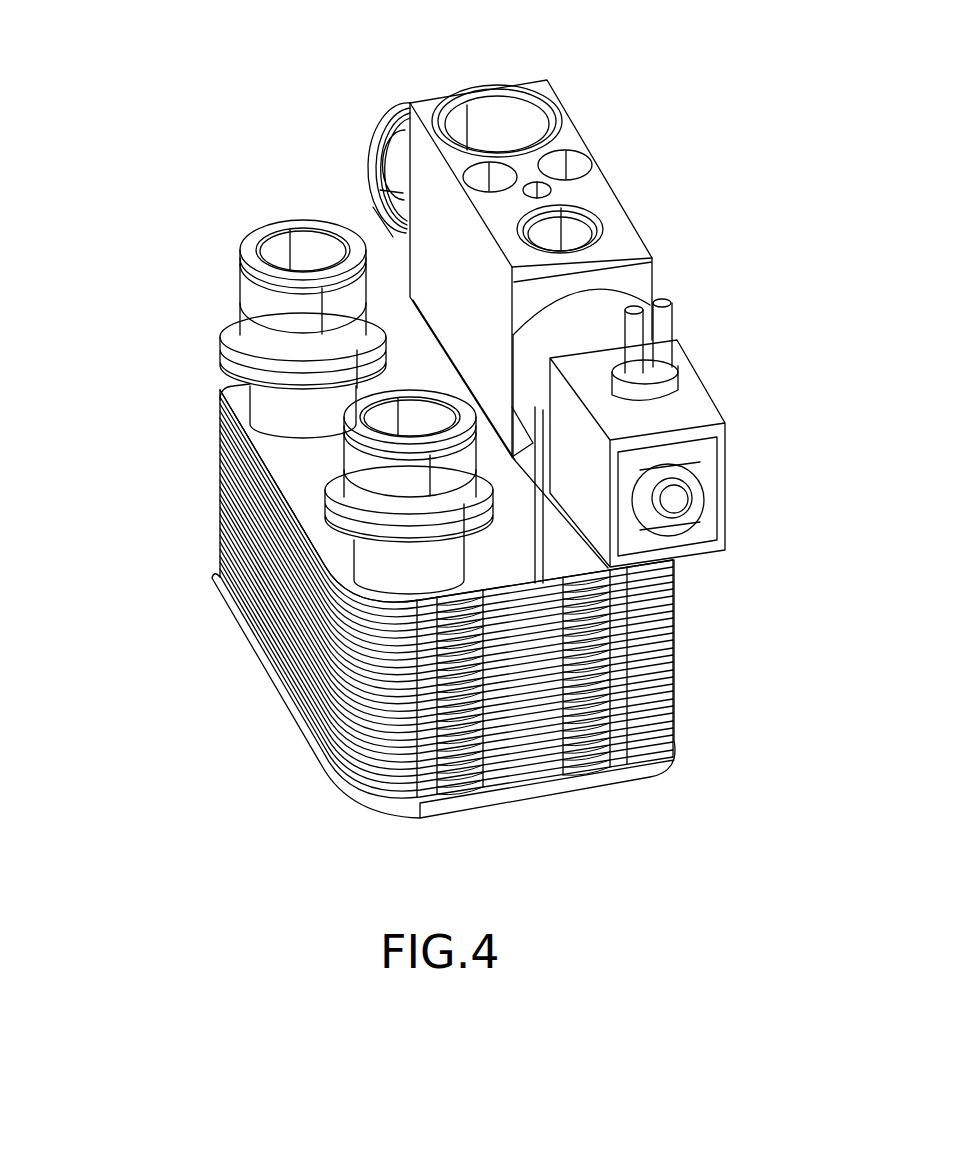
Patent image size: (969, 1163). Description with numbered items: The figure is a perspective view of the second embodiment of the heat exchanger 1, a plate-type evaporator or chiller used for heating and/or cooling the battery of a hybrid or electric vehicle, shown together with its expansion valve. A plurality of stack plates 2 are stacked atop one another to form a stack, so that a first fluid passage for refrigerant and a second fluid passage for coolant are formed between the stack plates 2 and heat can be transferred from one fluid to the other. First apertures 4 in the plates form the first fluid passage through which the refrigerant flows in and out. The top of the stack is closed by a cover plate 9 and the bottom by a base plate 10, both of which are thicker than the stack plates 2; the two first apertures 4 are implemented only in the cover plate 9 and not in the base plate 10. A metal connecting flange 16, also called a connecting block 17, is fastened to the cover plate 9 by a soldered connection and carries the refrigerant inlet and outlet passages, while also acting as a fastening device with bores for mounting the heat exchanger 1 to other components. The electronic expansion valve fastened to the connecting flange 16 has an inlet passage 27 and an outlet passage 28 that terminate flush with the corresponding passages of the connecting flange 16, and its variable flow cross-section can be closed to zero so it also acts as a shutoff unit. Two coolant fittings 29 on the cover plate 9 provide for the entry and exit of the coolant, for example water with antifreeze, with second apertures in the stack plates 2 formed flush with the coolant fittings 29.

The heat exchanger 1 is at (450, 443).
The stack plates 2 is at (220, 486).
The first apertures 4 is at (382, 538).
The cover plate 9 is at (290, 467).
The base plate 10 is at (552, 788).
The connecting flange 16 is at (701, 433).
The connecting block 17 is at (555, 548).
The inlet passage 27 is at (578, 220).
The outlet passage 28 is at (510, 127).
The coolant fittings 29 is at (360, 467).